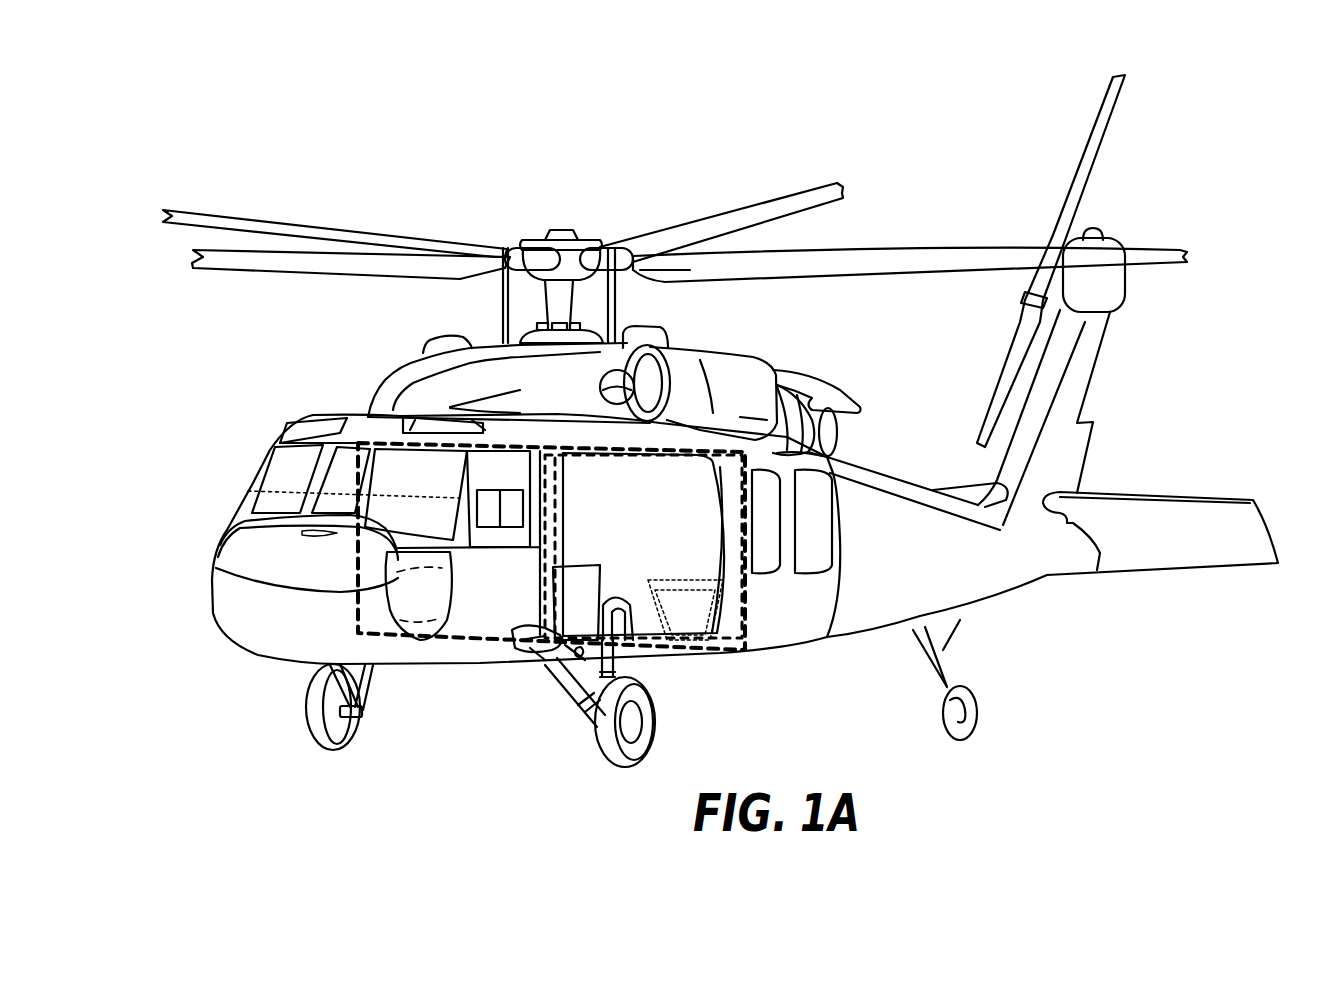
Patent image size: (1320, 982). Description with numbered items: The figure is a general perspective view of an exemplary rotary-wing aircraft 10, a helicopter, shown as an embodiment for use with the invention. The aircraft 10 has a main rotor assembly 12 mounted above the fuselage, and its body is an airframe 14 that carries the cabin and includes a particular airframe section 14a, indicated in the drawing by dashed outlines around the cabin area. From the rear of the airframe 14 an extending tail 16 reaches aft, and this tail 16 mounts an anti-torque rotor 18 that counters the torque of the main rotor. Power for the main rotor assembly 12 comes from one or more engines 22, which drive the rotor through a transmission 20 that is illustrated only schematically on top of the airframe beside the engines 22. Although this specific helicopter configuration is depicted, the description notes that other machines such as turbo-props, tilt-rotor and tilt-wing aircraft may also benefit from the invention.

The rotary-wing aircraft 10 is at (735, 128).
The main rotor assembly 12 is at (562, 228).
The airframe 14 is at (487, 640).
The airframe section 14a is at (717, 645).
The extending tail 16 is at (977, 583).
The anti-torque rotor 18 is at (1083, 190).
The transmission 20 is at (498, 391).
The engines 22 is at (755, 399).